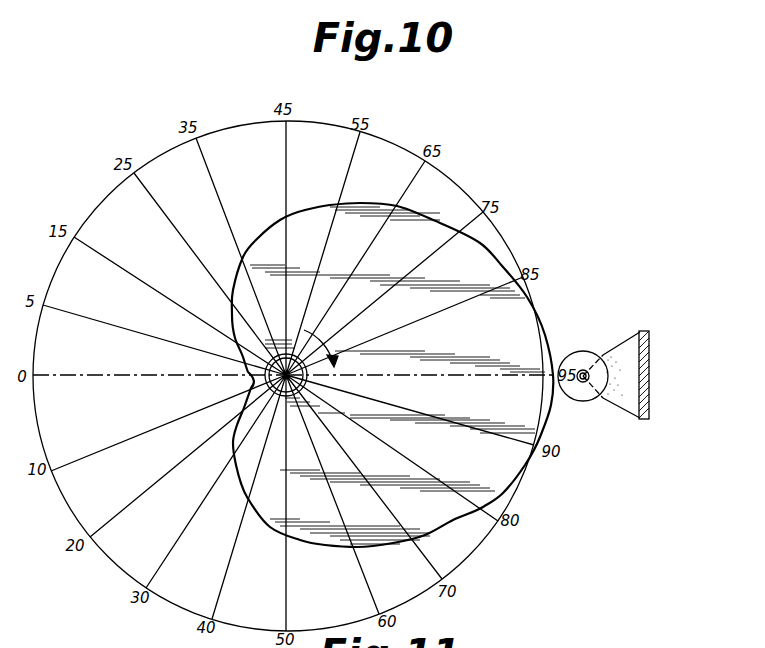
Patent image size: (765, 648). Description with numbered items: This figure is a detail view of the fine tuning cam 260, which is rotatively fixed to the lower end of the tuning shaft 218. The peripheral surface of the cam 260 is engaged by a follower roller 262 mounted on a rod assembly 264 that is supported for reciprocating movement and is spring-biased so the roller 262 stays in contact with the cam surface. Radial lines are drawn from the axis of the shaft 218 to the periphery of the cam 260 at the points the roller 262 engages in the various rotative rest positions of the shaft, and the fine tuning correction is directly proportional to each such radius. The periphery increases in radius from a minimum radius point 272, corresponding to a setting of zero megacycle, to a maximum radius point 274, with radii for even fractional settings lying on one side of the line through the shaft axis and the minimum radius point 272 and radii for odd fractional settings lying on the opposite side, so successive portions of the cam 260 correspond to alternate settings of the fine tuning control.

The tuning shaft 218 is at (304, 391).
The fine tuning cam 260 is at (413, 341).
The follower roller 262 is at (580, 352).
The rod assembly 264 is at (650, 385).
The minimum radius point 272 is at (250, 377).
The maximum radius point 274 is at (553, 378).